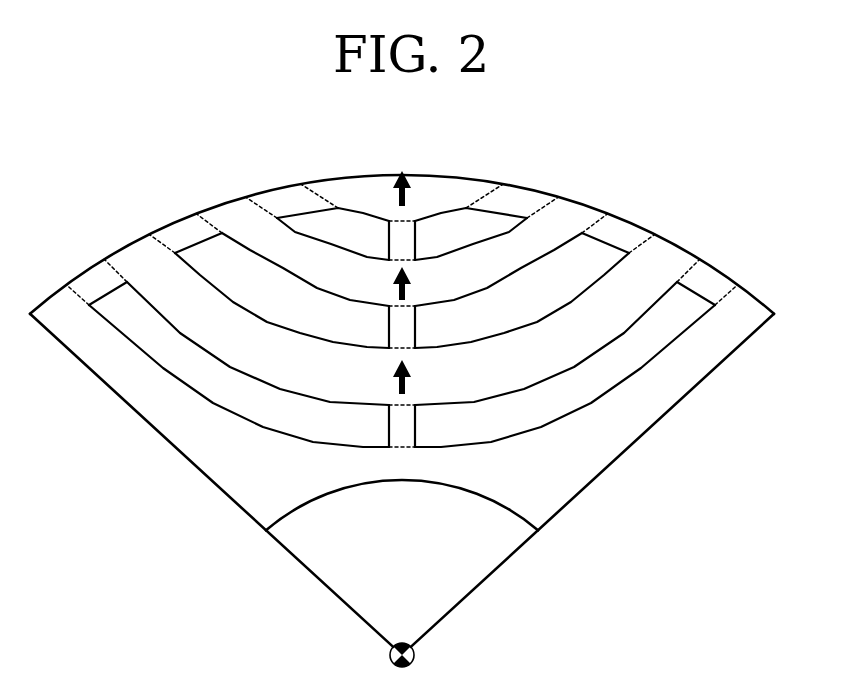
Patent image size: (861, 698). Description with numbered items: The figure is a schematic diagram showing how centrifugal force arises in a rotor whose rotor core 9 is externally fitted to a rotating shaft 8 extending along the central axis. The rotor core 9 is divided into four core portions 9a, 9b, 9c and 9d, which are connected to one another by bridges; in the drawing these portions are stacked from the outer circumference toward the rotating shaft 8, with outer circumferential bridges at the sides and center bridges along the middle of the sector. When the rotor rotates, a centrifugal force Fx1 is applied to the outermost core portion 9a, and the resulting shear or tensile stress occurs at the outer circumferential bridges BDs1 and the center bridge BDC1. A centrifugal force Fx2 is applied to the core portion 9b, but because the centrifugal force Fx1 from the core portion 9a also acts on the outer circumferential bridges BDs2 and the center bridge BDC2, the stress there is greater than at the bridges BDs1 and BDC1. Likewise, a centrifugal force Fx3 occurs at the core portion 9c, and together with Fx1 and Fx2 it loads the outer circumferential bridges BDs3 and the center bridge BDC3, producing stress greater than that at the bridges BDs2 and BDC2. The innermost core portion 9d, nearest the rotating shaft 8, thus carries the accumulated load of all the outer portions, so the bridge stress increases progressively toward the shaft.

The rotating shaft 8 is at (328, 568).
The rotor core 9 is at (243, 488).
The core portion 9a is at (363, 190).
The core portion 9b is at (242, 218).
The core portion 9c is at (148, 267).
The core portion 9d is at (65, 320).
The centrifugal force Fx1 is at (405, 195).
The centrifugal force Fx2 is at (398, 295).
The centrifugal force Fx3 is at (399, 379).
The outer circumferential bridges BDs1 is at (520, 198).
The outer circumferential bridges BDs2 is at (628, 222).
The outer circumferential bridges BDs3 is at (718, 273).
The center bridge BDC1 is at (398, 236).
The center bridge BDC2 is at (398, 322).
The center bridge BDC3 is at (398, 424).